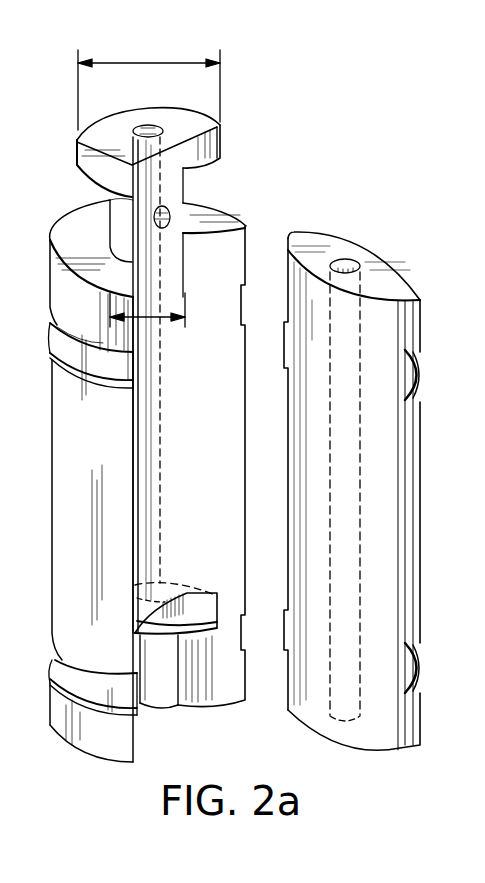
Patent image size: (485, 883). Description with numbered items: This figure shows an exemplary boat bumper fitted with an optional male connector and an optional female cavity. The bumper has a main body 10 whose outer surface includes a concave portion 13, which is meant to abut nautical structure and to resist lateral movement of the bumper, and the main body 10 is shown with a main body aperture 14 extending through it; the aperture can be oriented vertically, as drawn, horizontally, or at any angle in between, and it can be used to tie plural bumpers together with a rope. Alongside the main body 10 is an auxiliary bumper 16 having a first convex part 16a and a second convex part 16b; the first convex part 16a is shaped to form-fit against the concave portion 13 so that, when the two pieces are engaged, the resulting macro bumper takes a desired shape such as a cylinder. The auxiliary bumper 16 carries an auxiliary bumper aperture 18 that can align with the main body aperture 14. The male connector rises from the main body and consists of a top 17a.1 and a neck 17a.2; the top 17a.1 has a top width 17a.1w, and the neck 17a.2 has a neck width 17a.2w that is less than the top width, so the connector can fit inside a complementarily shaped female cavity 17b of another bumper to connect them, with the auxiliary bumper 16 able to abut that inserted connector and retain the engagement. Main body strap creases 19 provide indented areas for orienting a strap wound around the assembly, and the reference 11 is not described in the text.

The main body 10 is at (120, 792).
The housing 11 is at (72, 452).
The concave portion 13 is at (207, 452).
The main body aperture 14 is at (148, 125).
The auxiliary bumper 16 is at (387, 718).
The first convex part 16a is at (310, 703).
The second convex part 16b is at (418, 275).
The top 17a.1 is at (83, 165).
The top width 17a.1w is at (149, 85).
The neck 17a.2 is at (108, 217).
The neck width 17a.2w is at (148, 320).
The female cavity 17b is at (180, 605).
The auxiliary bumper aperture 18 is at (352, 258).
The main body strap crease 19 is at (55, 330).